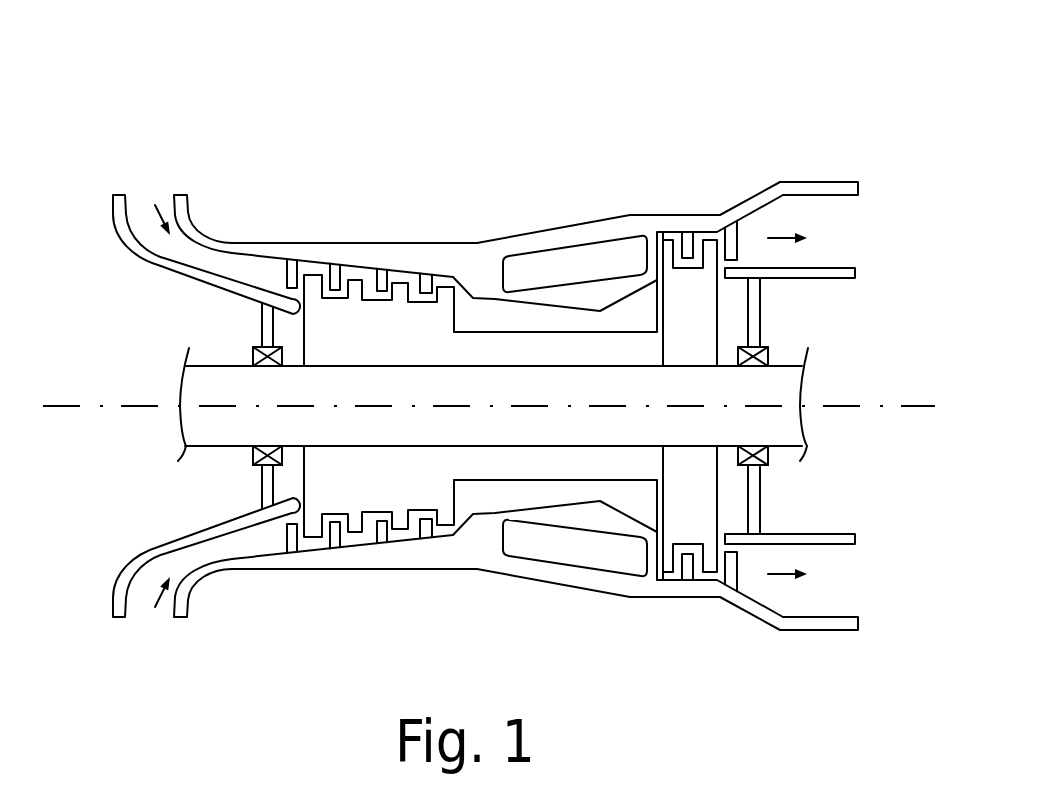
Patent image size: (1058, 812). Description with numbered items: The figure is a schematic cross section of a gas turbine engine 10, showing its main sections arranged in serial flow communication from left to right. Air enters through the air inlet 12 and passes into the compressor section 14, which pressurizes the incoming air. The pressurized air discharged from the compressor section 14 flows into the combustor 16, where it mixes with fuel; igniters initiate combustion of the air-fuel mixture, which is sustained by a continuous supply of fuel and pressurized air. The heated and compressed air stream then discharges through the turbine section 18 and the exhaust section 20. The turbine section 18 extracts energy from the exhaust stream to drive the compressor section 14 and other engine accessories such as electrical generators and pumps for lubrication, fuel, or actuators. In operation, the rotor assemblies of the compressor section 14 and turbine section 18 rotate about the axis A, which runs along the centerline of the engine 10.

The gas turbine engine 10 is at (188, 78).
The air inlet 12 is at (147, 176).
The compressor section 14 is at (459, 173).
The combustor 16 is at (580, 258).
The turbine section 18 is at (742, 165).
The exhaust section 20 is at (868, 230).
The axis A is at (67, 405).